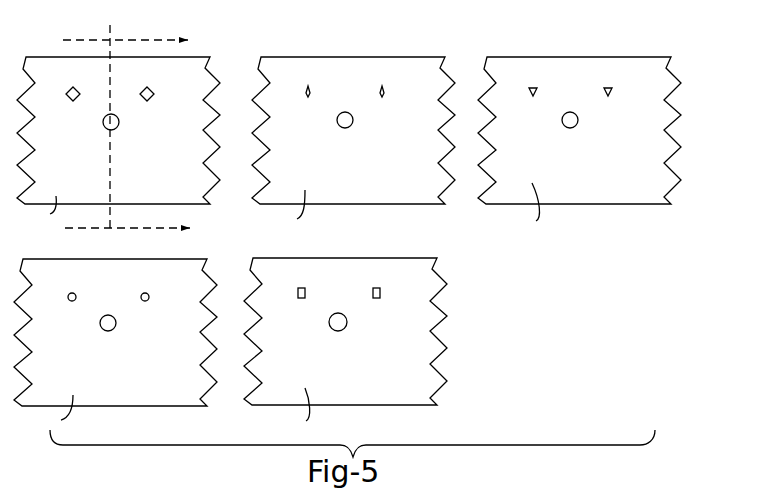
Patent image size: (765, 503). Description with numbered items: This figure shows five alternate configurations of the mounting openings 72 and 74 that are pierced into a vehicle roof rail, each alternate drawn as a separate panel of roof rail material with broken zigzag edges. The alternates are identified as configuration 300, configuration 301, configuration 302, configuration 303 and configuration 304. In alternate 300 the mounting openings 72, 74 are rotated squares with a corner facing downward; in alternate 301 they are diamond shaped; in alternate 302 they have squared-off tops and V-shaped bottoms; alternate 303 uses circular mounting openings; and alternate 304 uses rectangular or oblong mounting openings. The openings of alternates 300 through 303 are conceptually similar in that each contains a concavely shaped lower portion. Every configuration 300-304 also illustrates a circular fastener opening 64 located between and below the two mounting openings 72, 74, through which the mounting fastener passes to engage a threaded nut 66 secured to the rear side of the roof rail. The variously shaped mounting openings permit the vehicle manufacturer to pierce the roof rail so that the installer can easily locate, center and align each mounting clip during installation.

The circular fastener opening 64 is at (103, 122).
The threaded nut 66 is at (284, 306).
The mounting opening 72 is at (71, 87).
The mounting opening 74 is at (152, 88).
The alternate configuration with rotated square mounting openings 300 is at (197, 58).
The alternate configuration with diamond shaped mounting openings 301 is at (410, 64).
The alternate configuration with squared-top V-bottom mounting openings 302 is at (644, 63).
The alternate configuration with circular mounting openings 303 is at (194, 404).
The alternate configuration with rectangular or oblong mounting openings 304 is at (442, 358).